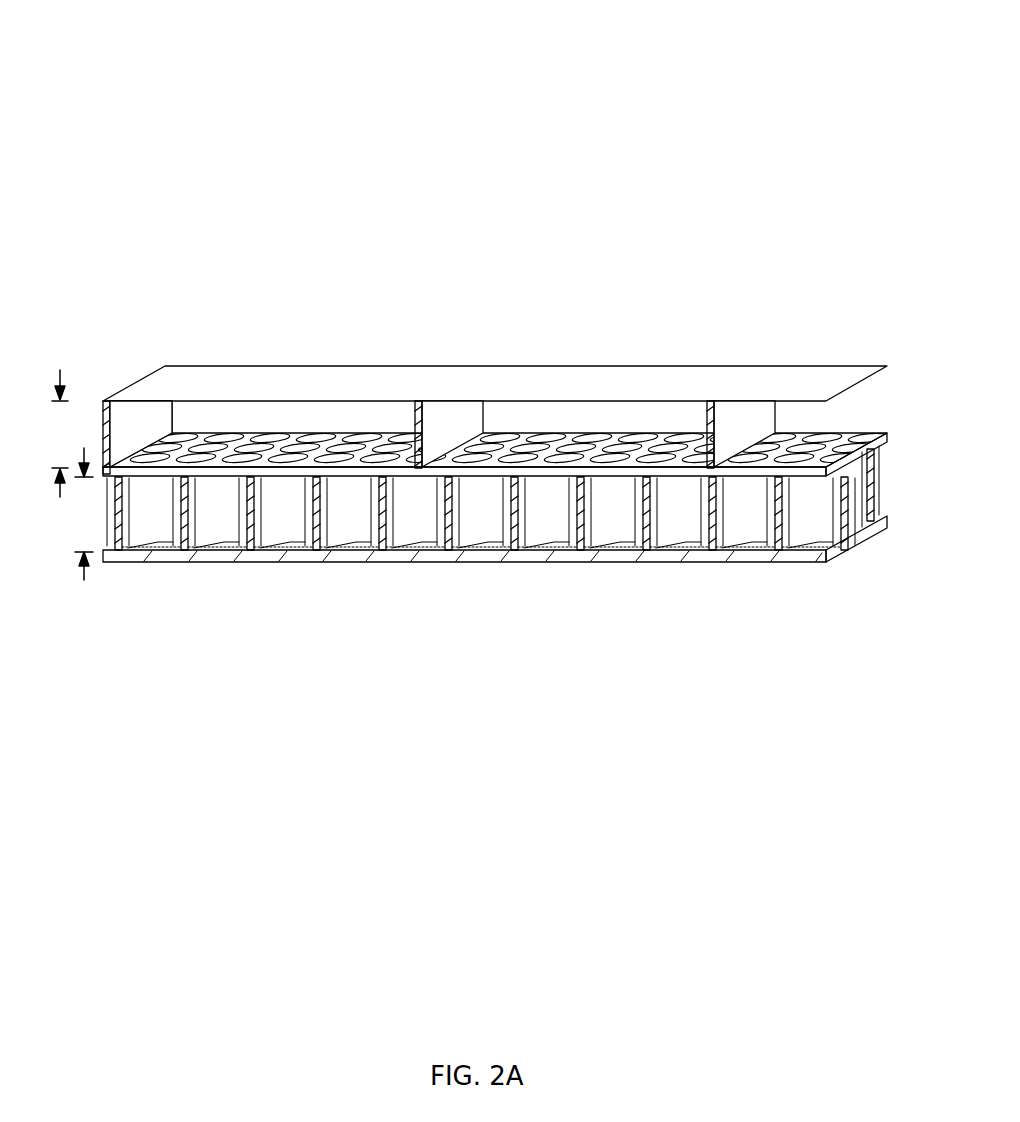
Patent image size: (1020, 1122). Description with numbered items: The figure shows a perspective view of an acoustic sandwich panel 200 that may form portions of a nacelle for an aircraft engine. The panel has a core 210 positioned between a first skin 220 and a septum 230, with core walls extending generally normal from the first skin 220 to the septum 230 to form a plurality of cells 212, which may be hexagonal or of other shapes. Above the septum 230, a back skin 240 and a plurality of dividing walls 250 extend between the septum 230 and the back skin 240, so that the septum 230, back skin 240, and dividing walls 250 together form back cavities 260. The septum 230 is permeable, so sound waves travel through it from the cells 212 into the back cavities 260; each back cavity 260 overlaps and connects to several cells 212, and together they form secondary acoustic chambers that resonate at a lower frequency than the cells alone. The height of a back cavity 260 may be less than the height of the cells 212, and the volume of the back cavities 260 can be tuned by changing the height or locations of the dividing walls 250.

The acoustic sandwich panel 200 is at (467, 376).
The core 210 is at (182, 518).
The cells 212 is at (400, 532).
The first skin 220 is at (619, 562).
The septum 230 is at (862, 431).
The back skin 240 is at (530, 366).
The dividing walls 250 is at (414, 420).
The back cavity 260 is at (287, 398).